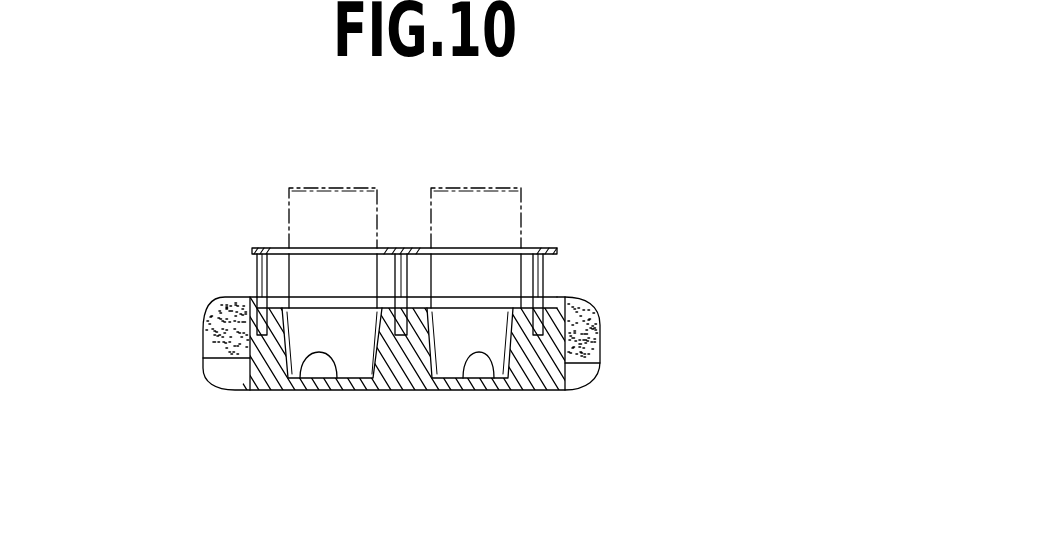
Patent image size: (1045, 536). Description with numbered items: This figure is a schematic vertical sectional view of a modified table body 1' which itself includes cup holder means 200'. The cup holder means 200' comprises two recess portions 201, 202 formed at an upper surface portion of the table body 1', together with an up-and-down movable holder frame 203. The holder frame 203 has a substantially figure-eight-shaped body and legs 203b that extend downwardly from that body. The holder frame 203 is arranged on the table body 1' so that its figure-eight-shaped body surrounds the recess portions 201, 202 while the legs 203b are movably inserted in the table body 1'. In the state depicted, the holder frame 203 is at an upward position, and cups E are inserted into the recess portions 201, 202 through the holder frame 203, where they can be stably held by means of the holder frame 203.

The table body 1' is at (449, 334).
The cup holder means 200' is at (459, 239).
The recess portion 201 is at (300, 390).
The recess portion 202 is at (490, 390).
The holder frame 203 is at (459, 239).
The legs 203b is at (260, 276).
The cups E is at (289, 222).